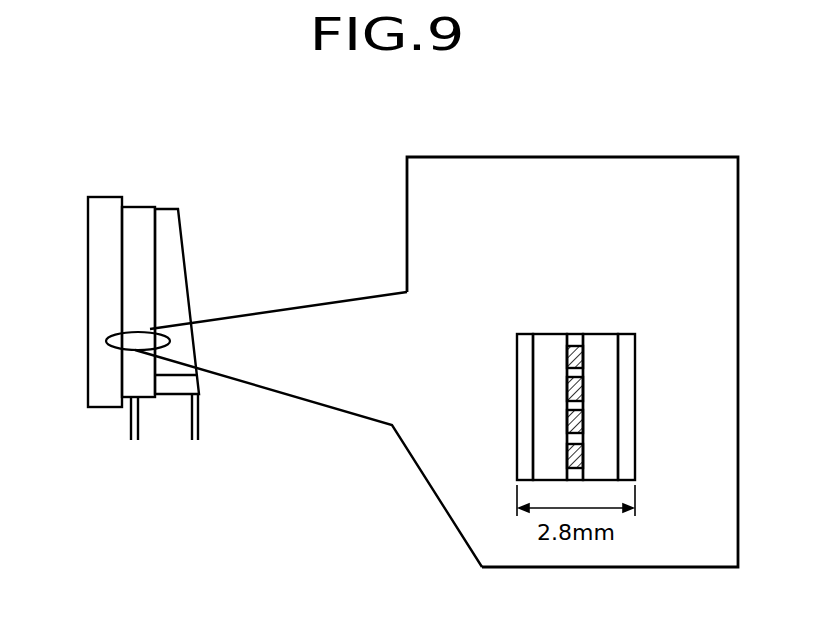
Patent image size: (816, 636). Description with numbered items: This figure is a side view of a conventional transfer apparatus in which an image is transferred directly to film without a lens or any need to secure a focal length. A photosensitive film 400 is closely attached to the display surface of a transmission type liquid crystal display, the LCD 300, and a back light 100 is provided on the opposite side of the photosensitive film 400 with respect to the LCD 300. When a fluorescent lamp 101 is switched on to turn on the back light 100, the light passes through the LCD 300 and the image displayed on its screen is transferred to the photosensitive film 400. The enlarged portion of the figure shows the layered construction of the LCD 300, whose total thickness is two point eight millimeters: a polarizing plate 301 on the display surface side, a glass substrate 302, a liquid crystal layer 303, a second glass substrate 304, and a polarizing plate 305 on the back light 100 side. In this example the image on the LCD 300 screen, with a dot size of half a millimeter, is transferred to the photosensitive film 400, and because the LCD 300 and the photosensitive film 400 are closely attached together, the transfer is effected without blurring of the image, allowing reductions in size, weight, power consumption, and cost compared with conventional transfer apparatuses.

The back light 100 is at (172, 240).
The fluorescent lamp 101 is at (198, 385).
The transmission type liquid crystal display 300 is at (132, 212).
The photosensitive film 400 is at (105, 205).
The polarizing plate 301 is at (523, 380).
The glass substrate 302 is at (550, 340).
The liquid crystal layer 303 is at (573, 340).
The glass substrate 304 is at (600, 340).
The polarizing plate 305 is at (628, 380).